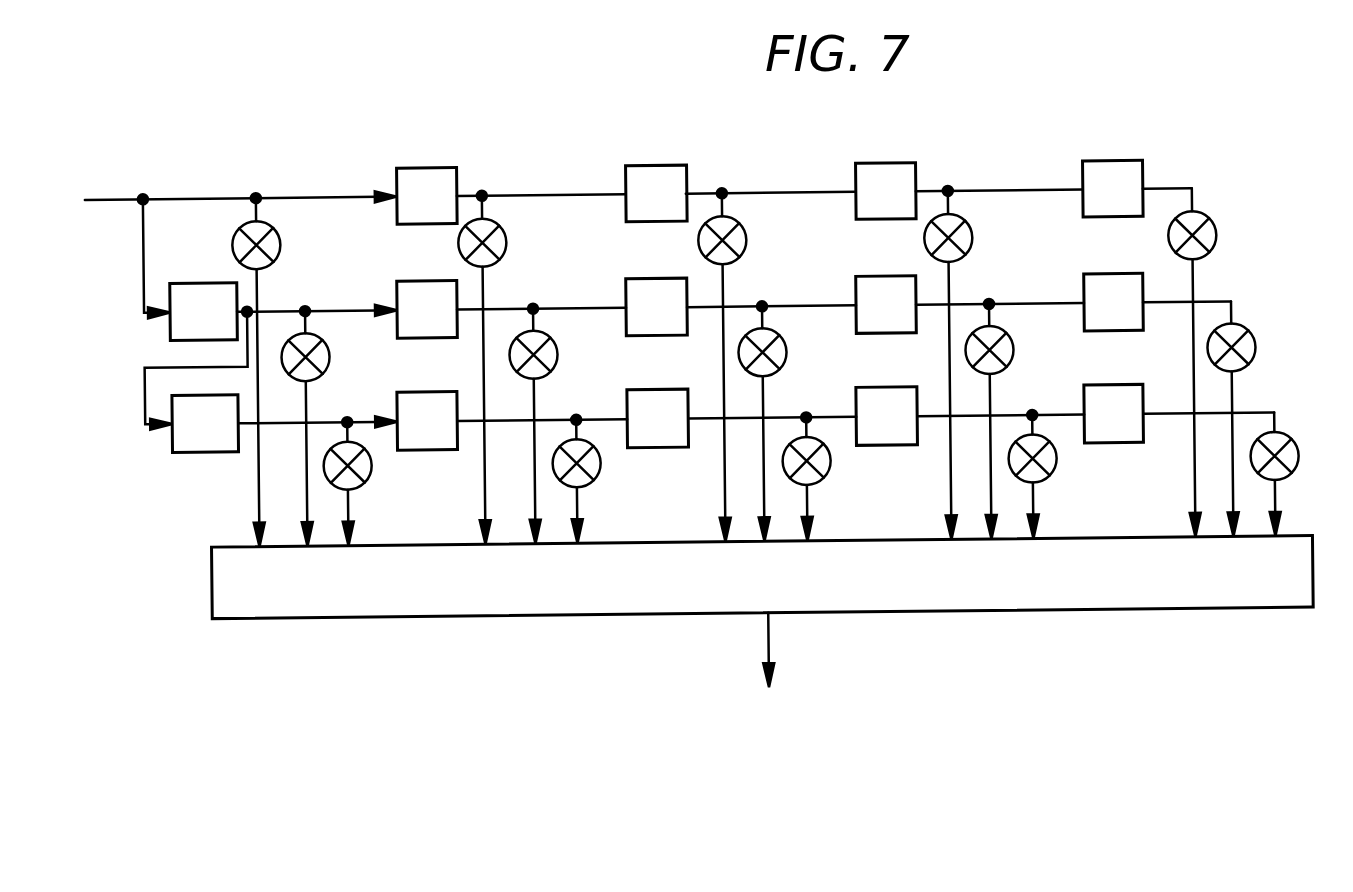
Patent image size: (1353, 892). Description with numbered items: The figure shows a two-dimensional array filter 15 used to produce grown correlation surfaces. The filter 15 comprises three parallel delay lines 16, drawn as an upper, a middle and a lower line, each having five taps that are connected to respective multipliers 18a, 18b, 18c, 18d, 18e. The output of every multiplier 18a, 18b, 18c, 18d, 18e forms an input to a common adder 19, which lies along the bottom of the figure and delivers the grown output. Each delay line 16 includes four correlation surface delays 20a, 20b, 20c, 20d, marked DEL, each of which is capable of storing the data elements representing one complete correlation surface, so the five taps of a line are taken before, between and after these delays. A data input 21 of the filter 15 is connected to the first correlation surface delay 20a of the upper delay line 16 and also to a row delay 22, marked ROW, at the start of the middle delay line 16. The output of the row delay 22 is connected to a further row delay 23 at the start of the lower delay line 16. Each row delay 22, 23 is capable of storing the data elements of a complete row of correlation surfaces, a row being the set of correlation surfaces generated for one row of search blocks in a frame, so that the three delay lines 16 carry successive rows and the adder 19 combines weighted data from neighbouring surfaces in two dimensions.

The two-dimensional array filter 15 is at (997, 649).
The delay line 16 is at (991, 193).
The multiplier 18a is at (282, 239).
The multiplier 18b is at (508, 239).
The multiplier 18c is at (748, 236).
The multiplier 18d is at (974, 236).
The multiplier 18e is at (1218, 236).
The adder 19 is at (543, 614).
The correlation surface delay 20a is at (421, 165).
The correlation surface delay 20b is at (654, 165).
The correlation surface delay 20c is at (890, 164).
The correlation surface delay 20d is at (1140, 164).
The input 21 is at (102, 194).
The row delay 22 is at (170, 327).
The further row delay 23 is at (190, 447).